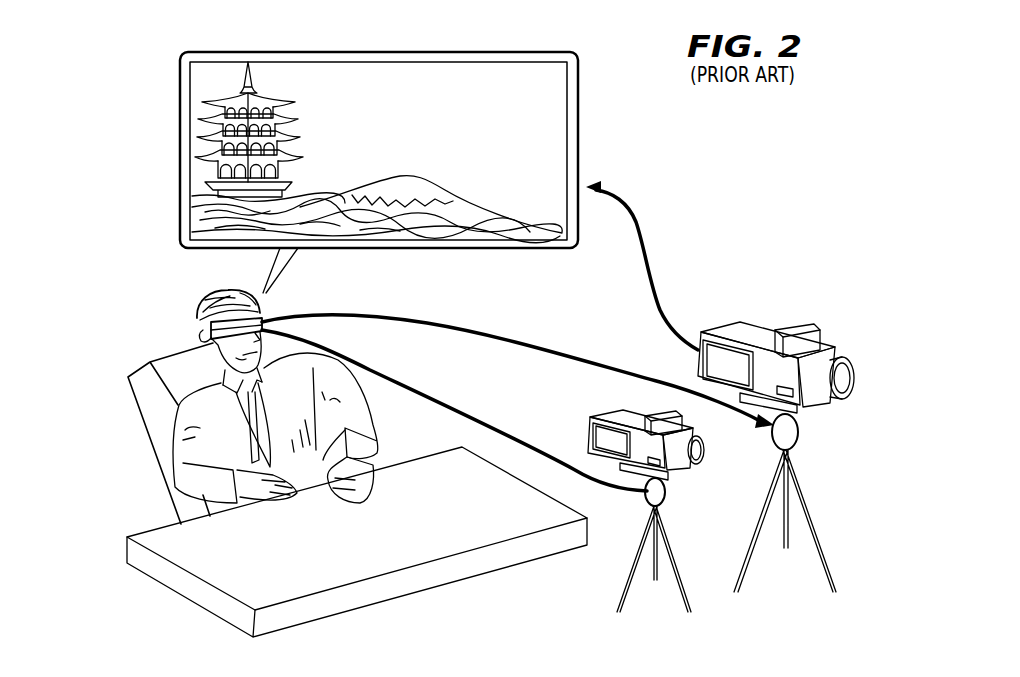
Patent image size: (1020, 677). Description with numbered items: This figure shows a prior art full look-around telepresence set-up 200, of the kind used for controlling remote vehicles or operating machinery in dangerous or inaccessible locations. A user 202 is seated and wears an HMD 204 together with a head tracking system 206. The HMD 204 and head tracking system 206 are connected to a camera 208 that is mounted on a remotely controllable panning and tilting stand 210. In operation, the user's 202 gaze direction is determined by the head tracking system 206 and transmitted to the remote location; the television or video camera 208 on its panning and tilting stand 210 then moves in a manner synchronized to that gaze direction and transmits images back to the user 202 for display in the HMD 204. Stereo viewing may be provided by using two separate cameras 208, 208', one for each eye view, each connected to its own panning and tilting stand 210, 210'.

The set-up 200 is at (722, 189).
The user 202 is at (135, 446).
The HMD 204 is at (205, 329).
The head tracking system 206 is at (213, 291).
The camera 208 is at (776, 334).
The camera 208' is at (618, 424).
The panning and tilting stand 210 is at (801, 503).
The panning and tilting stand 210' is at (607, 545).